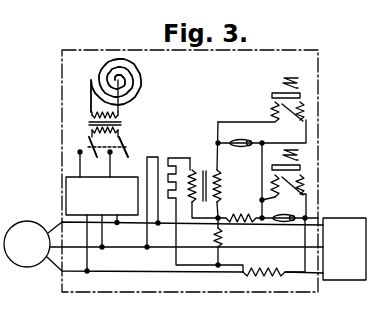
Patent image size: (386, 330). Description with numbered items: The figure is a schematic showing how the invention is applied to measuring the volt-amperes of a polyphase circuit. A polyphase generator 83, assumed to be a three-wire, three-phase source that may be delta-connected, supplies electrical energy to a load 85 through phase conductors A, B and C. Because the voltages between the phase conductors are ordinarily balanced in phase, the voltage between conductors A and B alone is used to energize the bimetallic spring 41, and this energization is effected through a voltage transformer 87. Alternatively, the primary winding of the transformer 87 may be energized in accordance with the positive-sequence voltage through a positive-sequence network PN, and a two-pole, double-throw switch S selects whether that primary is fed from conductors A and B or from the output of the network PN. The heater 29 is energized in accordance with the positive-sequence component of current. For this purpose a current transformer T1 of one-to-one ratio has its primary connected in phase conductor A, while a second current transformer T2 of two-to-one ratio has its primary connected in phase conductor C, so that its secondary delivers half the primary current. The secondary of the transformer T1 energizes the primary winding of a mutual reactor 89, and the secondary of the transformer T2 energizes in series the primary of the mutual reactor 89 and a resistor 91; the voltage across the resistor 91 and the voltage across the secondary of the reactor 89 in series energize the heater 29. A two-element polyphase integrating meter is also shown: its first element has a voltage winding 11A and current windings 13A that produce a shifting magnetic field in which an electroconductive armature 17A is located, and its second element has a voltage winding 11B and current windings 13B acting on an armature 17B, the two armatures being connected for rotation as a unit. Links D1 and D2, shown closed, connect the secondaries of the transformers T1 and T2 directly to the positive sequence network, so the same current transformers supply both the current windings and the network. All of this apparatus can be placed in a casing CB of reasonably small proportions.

The bimetallic spring 41 is at (144, 80).
The voltage transformer 87 is at (122, 124).
The heater 29 is at (168, 158).
The mutual reactor 89 is at (203, 169).
The resistor 91 is at (214, 237).
The polyphase generator 83 is at (22, 267).
The load 85 is at (355, 280).
The voltage winding 11A is at (298, 83).
The electroconductive armature 17A is at (300, 96).
The current windings 13A is at (304, 115).
The voltage winding 11B is at (298, 155).
The electroconductive armature 17B is at (300, 168).
The current windings 13B is at (304, 187).
The two-pole, double-throw switch S is at (86, 147).
The positive-sequence network PN is at (66, 193).
The casing CB is at (186, 294).
The phase conductor A is at (137, 224).
The phase conductor B is at (137, 249).
The phase conductor C is at (140, 273).
The link D1 is at (246, 147).
The link D2 is at (274, 222).
The current transformer T1 is at (250, 223).
The current transformer T2 is at (243, 276).